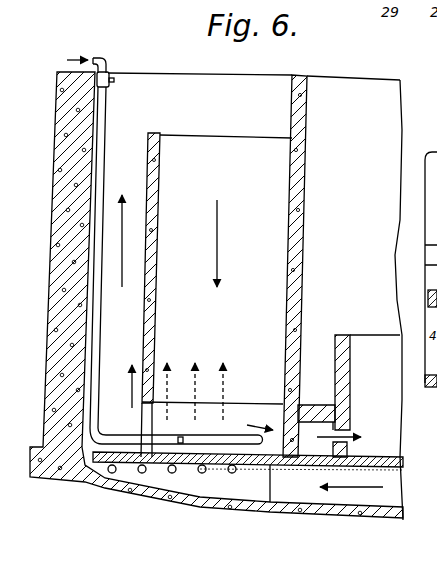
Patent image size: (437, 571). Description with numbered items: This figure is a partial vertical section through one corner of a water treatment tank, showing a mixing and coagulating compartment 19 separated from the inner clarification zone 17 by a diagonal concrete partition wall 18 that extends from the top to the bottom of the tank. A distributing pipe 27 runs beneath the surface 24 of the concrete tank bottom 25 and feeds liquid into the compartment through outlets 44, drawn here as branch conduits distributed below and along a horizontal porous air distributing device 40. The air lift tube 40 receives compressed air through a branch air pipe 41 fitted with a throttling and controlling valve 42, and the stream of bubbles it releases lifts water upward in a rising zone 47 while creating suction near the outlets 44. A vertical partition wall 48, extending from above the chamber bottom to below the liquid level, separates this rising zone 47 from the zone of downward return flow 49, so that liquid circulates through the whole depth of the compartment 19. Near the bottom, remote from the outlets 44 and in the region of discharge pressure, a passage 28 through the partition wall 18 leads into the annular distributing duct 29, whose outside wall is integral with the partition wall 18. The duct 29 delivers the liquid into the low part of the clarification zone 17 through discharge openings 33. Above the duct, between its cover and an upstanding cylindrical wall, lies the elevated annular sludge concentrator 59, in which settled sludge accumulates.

The clarification zone 17 is at (365, 200).
The concrete partition wall 18 is at (302, 243).
The mixing and coagulating compartment 19 is at (217, 105).
The surface of the tank bottom 24 is at (387, 456).
The concrete tank bottom 25 is at (403, 463).
The distributing pipe 27 is at (338, 516).
The passage 28 is at (280, 420).
The distributing duct 29 is at (307, 456).
The discharge opening 33 is at (348, 427).
The air distributing device 40 is at (173, 443).
The branch air pipe 41 is at (105, 135).
The throttling and controlling valve 42 is at (106, 78).
The outlet 44 is at (230, 474).
The rising zone 47 is at (128, 331).
The partition wall 48 is at (153, 242).
The zone of downward return flow 49 is at (268, 256).
The sludge concentrator 59 is at (327, 385).